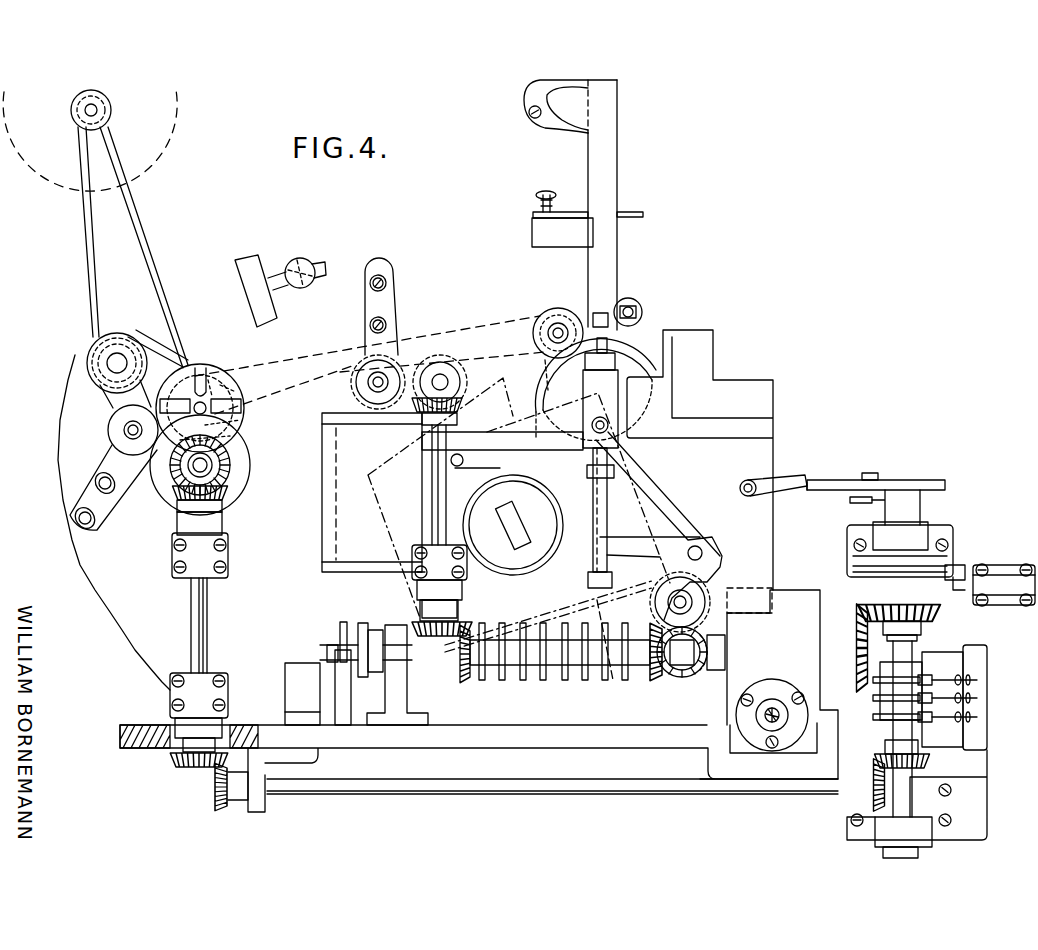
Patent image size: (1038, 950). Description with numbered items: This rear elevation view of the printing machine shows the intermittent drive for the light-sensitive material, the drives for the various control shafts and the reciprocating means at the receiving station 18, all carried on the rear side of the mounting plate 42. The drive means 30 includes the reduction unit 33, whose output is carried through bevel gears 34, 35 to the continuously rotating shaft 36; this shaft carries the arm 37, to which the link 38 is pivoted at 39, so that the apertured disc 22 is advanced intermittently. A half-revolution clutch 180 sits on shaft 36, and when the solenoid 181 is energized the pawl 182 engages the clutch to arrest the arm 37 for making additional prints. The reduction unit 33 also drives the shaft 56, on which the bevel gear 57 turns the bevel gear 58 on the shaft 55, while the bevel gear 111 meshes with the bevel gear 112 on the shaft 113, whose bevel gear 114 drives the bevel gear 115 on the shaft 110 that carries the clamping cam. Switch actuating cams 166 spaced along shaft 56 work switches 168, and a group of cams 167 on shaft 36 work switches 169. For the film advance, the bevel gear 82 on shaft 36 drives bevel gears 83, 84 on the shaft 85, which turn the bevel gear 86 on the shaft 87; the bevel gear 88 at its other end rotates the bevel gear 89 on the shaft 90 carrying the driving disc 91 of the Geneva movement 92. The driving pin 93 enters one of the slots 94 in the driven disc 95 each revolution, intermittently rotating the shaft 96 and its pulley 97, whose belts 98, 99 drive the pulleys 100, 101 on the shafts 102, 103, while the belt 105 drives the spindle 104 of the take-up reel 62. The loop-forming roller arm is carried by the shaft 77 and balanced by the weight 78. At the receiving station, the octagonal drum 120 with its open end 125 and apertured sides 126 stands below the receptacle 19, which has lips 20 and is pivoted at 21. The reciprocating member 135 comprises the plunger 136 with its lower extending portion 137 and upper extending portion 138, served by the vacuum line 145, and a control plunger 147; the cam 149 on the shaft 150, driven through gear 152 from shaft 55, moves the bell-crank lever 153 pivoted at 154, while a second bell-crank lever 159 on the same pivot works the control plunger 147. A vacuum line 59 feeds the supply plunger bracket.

The take-up reel 62 is at (177, 107).
The spindle 104 is at (95, 112).
The belt 105 is at (110, 233).
The weight 78 is at (249, 262).
The shaft 77 is at (302, 264).
The shaft 102 is at (112, 360).
The belt 98 is at (154, 352).
The pulley 100 is at (100, 378).
The driven disc 95 is at (193, 370).
The pulley 97 is at (212, 376).
The shaft 96 is at (224, 380).
The slots 94 is at (232, 406).
The driving pin 93 is at (250, 428).
The Geneva movement 92 is at (252, 437).
The driving disc 91 is at (245, 470).
The shaft 90 is at (226, 458).
The bevel gear 88 is at (230, 485).
The bevel gear 89 is at (174, 478).
The shaft 87 is at (192, 622).
The mounting plate 42 is at (113, 593).
The shaft 85 is at (400, 795).
The bevel gear 86 is at (174, 766).
The bevel gear 84 is at (216, 800).
The switches 168 is at (328, 650).
The switch actuating cams 166 is at (343, 622).
The shaft 56 is at (420, 666).
The bevel gear 112 is at (416, 624).
The bevel gear 111 is at (464, 682).
The bevel gear 57 is at (665, 681).
The shaft 55 is at (680, 686).
The bevel gear 58 is at (693, 672).
The shaft 113 is at (433, 497).
The bevel gear 114 is at (464, 405).
The shaft 110 is at (443, 378).
The bevel gear 115 is at (467, 372).
The belt 99 is at (346, 356).
The disc 22 is at (565, 451).
The open end 125 is at (568, 415).
The control plunger 147 is at (600, 530).
The reciprocating member 135 is at (614, 503).
The lower extending portion 137 is at (590, 473).
The plunger 136 is at (597, 490).
The vacuum line 145 is at (606, 428).
The receiving station 18 is at (648, 337).
The pulley 101 is at (565, 320).
The shaft 103 is at (552, 334).
The sides 126 is at (548, 362).
The drum 120 is at (552, 384).
The receptacle 19 is at (617, 252).
The lips 20 is at (604, 313).
The pivot 21 is at (638, 306).
The upper extending portion 138 is at (635, 375).
The pivot 154 is at (702, 552).
The second bell-crank lever 159 is at (667, 538).
The bell-crank lever 153 is at (612, 588).
The shaft 150 is at (655, 610).
The cam 149 is at (712, 594).
The gear 152 is at (732, 626).
The vacuum line 59 is at (789, 478).
The pivot 39 is at (863, 473).
The link 38 is at (808, 494).
The arm 37 is at (856, 502).
The half-revolution clutch 180 is at (850, 585).
The pawl 182 is at (958, 566).
The solenoid 181 is at (1000, 575).
The reduction unit 33 is at (790, 604).
The drive means 30 is at (773, 690).
The bevel gear 34 is at (856, 626).
The bevel gear 35 is at (942, 612).
The shaft 36 is at (912, 642).
The cams 167 is at (871, 690).
The switches 169 is at (944, 700).
The bevel gear 82 is at (917, 761).
The bevel gear 83 is at (872, 766).